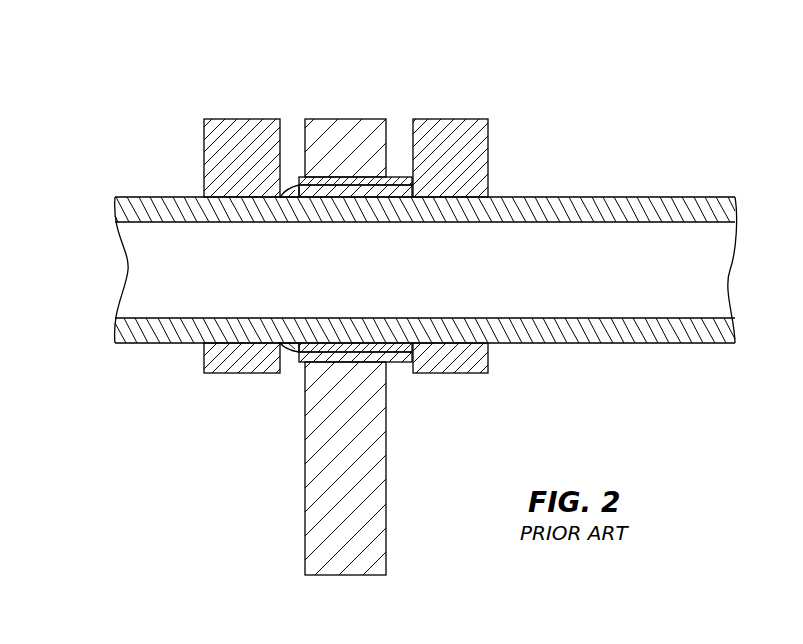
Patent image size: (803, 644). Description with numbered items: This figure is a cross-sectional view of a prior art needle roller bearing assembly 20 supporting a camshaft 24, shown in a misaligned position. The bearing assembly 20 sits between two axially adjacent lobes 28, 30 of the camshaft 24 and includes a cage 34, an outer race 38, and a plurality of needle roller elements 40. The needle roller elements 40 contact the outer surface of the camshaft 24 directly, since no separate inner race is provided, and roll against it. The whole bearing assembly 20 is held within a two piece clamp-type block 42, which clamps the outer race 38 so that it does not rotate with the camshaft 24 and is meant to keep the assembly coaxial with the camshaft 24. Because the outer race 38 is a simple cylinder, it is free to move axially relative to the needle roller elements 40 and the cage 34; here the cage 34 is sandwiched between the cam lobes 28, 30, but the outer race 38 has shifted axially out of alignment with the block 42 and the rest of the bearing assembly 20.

The needle roller bearing assembly 20 is at (323, 367).
The camshaft 24 is at (613, 178).
The cam lobe 28 is at (225, 153).
The cam lobe 30 is at (477, 162).
The cage 34 is at (292, 188).
The outer race 38 is at (393, 185).
The needle roller elements 40 is at (369, 350).
The two piece clamp-type block 42 is at (342, 130).